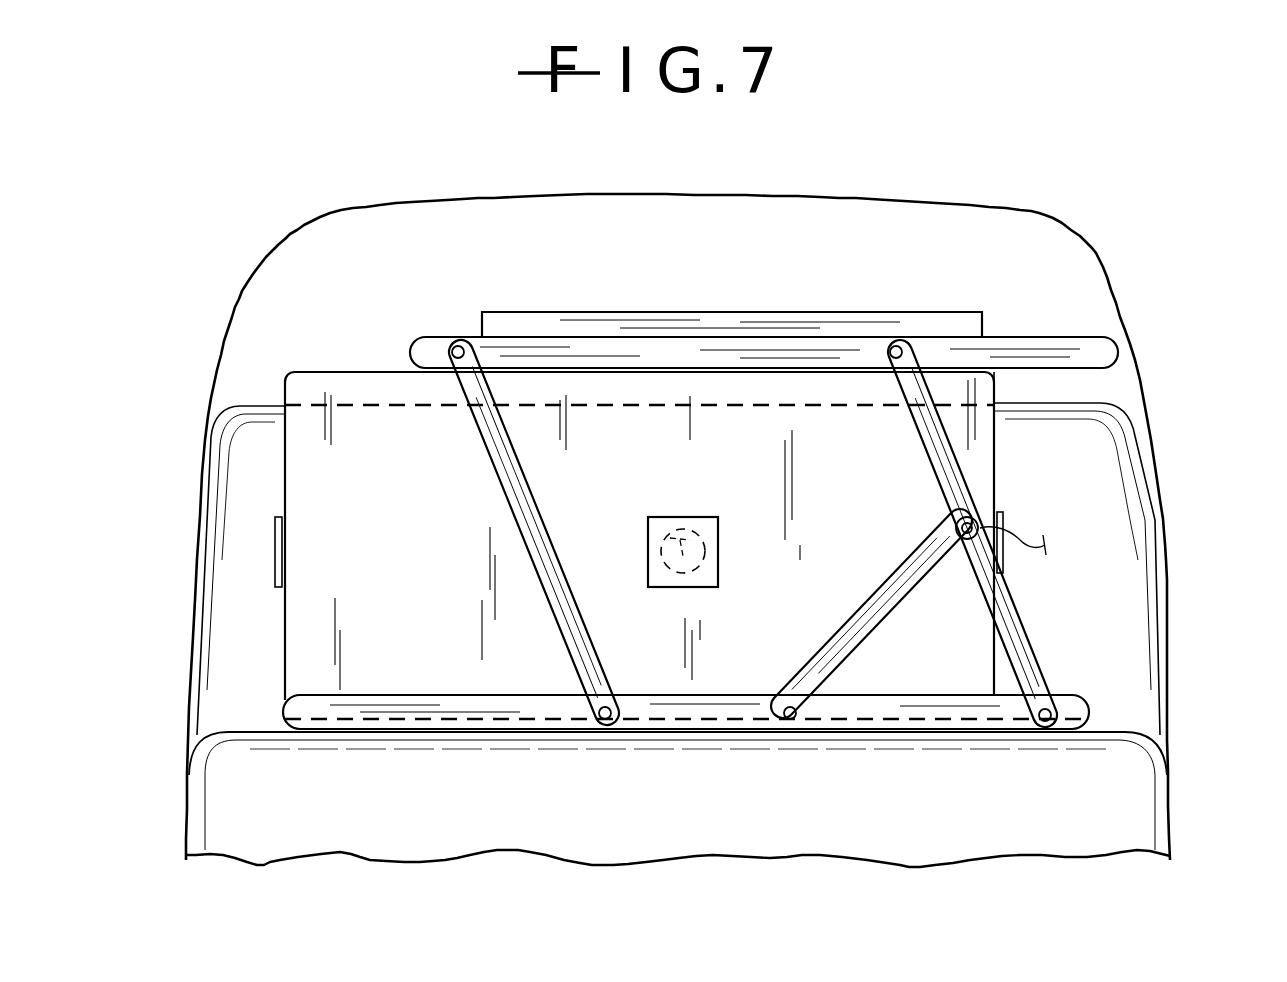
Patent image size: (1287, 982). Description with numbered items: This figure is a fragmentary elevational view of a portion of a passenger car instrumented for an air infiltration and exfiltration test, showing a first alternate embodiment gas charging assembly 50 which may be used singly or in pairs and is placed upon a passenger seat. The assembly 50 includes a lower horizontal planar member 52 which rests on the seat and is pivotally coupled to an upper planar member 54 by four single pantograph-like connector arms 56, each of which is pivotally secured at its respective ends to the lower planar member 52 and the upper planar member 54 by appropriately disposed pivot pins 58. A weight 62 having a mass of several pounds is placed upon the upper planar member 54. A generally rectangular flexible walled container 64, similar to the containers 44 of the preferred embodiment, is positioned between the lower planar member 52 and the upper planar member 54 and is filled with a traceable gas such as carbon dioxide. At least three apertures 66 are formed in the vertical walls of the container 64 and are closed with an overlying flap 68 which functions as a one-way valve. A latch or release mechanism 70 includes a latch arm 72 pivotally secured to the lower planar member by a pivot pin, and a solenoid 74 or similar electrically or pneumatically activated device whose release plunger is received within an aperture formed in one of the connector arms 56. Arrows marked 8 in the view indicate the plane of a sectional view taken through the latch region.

The section line 8- 8 is at (950, 480).
The flexible walled container 44 is at (1113, 767).
The gas charging assembly 50 is at (1058, 214).
The lower horizontal planar member 52 is at (1068, 706).
The upper planar member 54 is at (1105, 355).
The pantograph-like connector arms 56 is at (512, 484).
The pivot pins 58 is at (601, 722).
The weight 62 is at (693, 310).
The flexible walled container 64 is at (360, 433).
The apertures 66 is at (708, 508).
The overlying flap 68 is at (265, 549).
The latch or release mechanism 70 is at (980, 498).
The latch arm 72 is at (880, 610).
The solenoid 74 is at (947, 527).